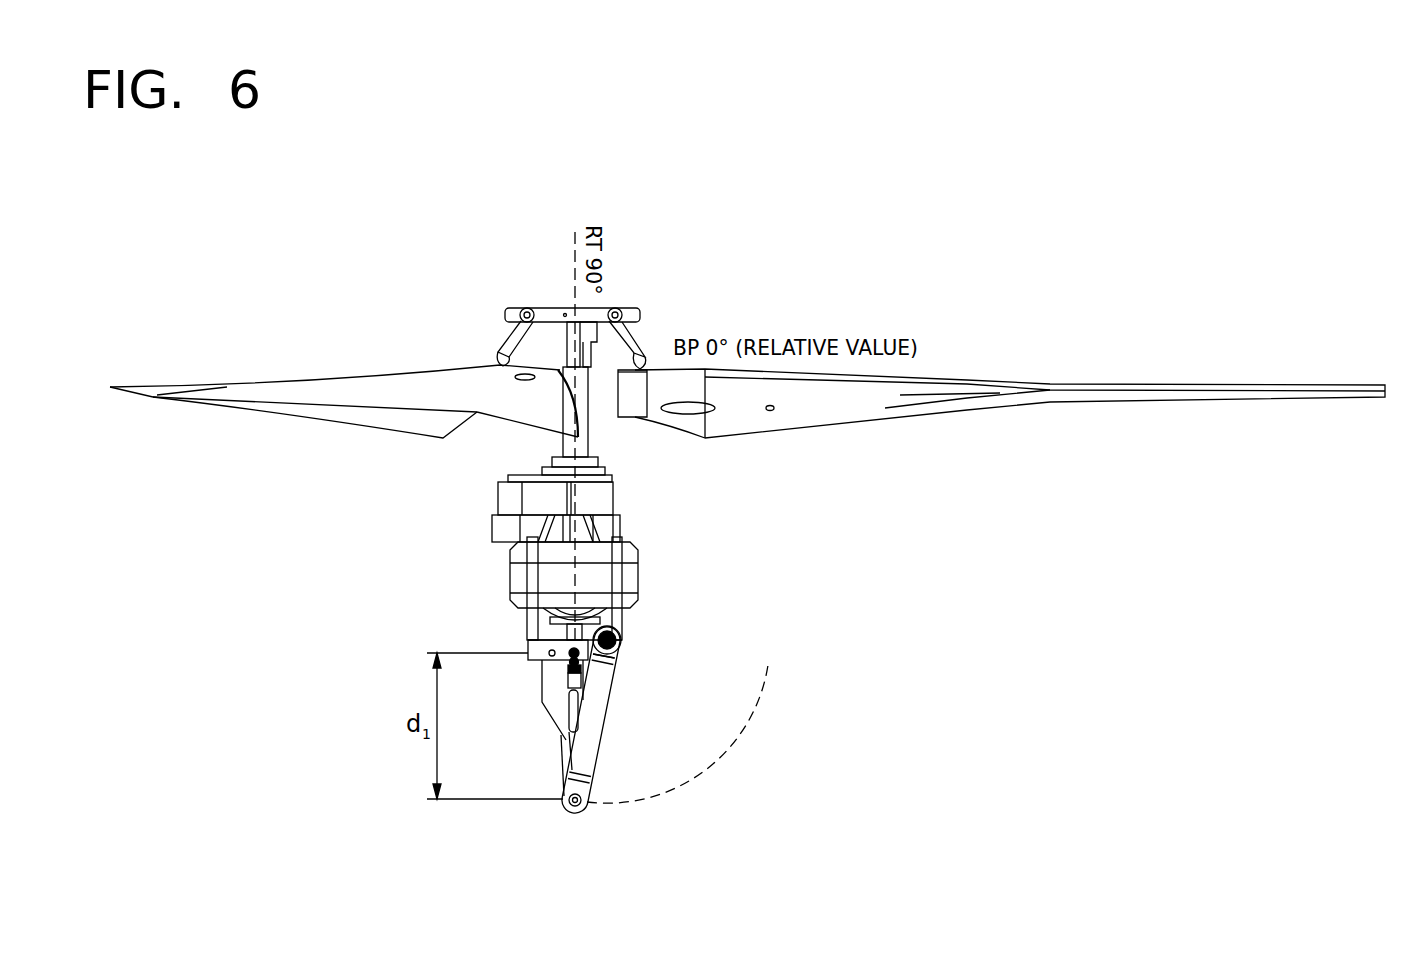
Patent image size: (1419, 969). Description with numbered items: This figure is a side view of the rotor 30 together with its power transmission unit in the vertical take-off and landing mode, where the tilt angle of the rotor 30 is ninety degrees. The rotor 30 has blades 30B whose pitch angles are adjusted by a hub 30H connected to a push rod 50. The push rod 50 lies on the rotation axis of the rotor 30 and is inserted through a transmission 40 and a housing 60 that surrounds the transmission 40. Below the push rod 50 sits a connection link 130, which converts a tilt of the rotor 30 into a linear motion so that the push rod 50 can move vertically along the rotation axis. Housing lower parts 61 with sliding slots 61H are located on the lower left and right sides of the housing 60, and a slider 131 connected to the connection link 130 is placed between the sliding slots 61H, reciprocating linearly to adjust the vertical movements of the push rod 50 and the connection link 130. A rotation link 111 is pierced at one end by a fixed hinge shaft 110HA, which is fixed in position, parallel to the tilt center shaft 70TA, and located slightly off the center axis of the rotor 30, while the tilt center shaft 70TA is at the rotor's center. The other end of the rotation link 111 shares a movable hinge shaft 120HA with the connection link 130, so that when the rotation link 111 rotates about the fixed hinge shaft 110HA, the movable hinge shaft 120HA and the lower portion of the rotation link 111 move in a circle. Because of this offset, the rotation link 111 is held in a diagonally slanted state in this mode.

The rotor 30 is at (950, 259).
The hub 30H is at (632, 315).
The blades 30B is at (958, 395).
The push rod 50 is at (570, 347).
The housing 60 is at (497, 527).
The transmission 40 is at (635, 578).
The housing lower parts 61 is at (548, 670).
The fixed hinge shaft 110HA is at (621, 637).
The tilt center shaft 70TA is at (612, 660).
The rotation link 111 is at (600, 708).
The slider 131 is at (565, 673).
The sliding slots 61H is at (560, 710).
The connection link 130 is at (562, 750).
The movable hinge shaft 120HA is at (568, 812).